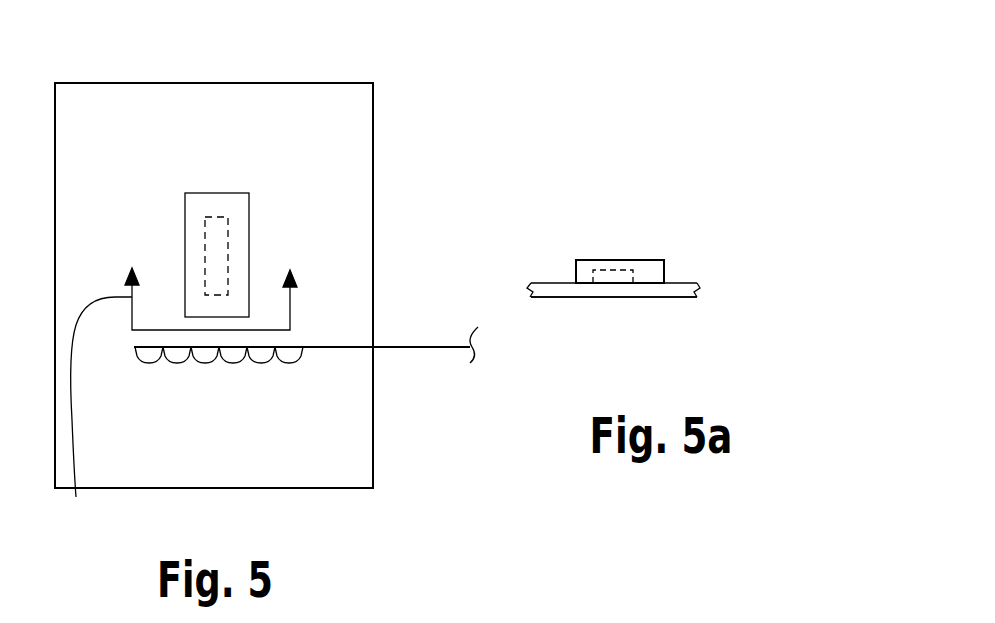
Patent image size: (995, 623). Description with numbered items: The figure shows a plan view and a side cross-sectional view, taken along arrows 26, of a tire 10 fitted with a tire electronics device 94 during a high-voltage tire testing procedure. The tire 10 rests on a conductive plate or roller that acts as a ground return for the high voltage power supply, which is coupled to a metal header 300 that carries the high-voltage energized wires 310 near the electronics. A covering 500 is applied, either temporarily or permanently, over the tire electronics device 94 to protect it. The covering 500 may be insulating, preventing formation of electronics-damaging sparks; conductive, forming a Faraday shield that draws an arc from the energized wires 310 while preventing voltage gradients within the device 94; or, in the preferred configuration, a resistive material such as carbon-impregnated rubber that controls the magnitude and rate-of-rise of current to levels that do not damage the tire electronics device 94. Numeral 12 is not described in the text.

In FIG. 5, the tire 10 is at (225, 83).
In FIG. 5A, the tire 10 is at (617, 297).
In FIG. 5, the substrate 12 is at (133, 113).
In FIG. 5A, the substrate 12 is at (552, 281).
In FIG. 5, the arrows 26 is at (181, 399).
In FIG. 5, the tire electronics device 94 is at (230, 218).
In FIG. 5A, the tire electronics device 94 is at (633, 276).
In FIG. 5, the metal header 300 is at (430, 347).
In FIG. 5, the high-voltage energized wires 310 is at (206, 363).
In FIG. 5, the covering 500 is at (250, 254).
In FIG. 5A, the covering 500 is at (663, 262).